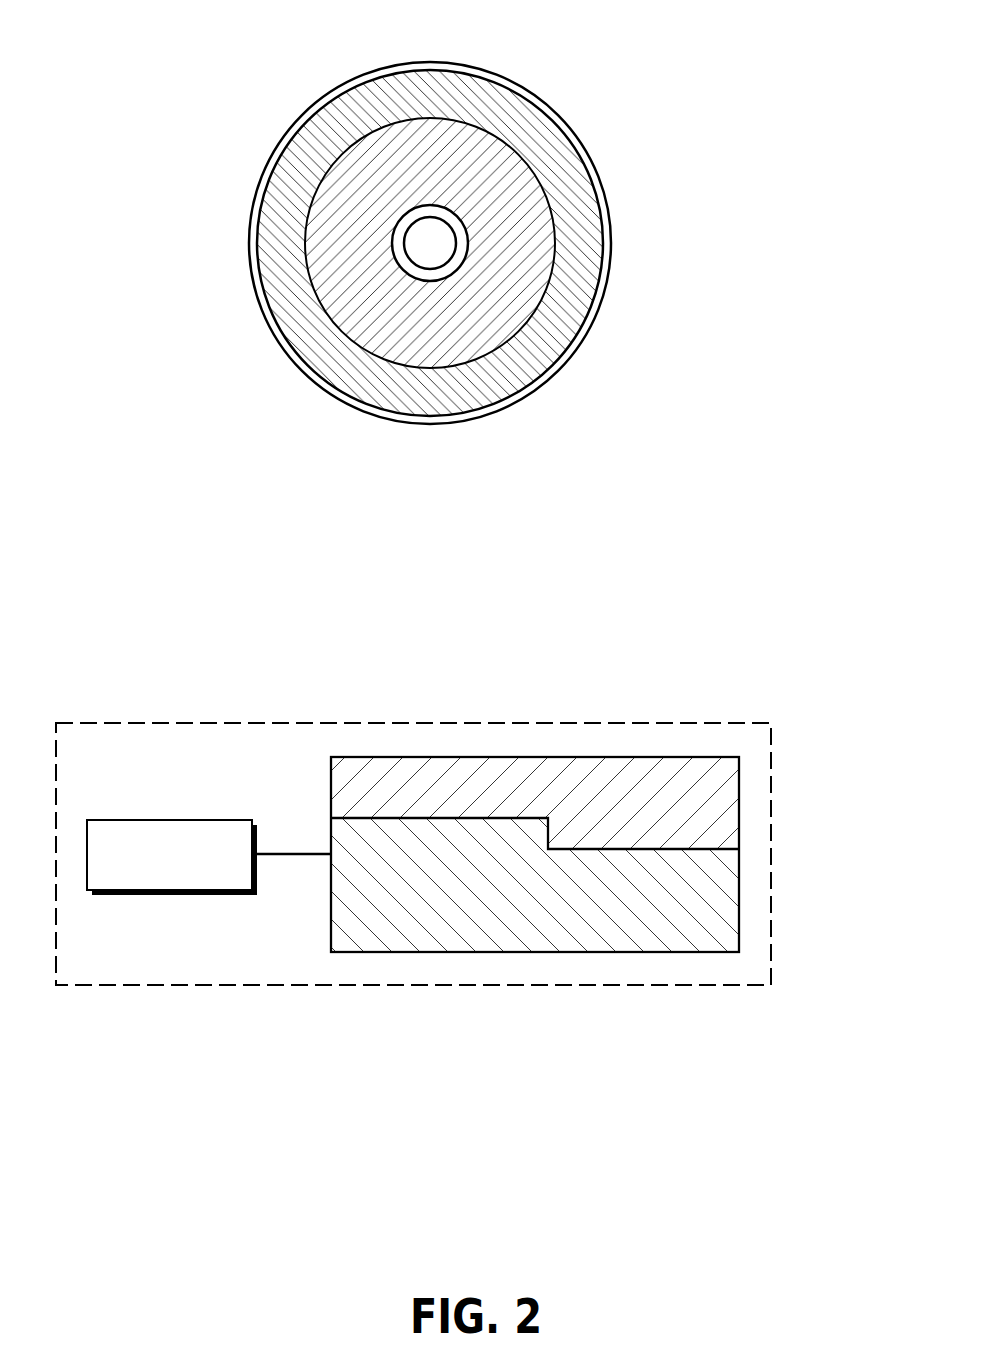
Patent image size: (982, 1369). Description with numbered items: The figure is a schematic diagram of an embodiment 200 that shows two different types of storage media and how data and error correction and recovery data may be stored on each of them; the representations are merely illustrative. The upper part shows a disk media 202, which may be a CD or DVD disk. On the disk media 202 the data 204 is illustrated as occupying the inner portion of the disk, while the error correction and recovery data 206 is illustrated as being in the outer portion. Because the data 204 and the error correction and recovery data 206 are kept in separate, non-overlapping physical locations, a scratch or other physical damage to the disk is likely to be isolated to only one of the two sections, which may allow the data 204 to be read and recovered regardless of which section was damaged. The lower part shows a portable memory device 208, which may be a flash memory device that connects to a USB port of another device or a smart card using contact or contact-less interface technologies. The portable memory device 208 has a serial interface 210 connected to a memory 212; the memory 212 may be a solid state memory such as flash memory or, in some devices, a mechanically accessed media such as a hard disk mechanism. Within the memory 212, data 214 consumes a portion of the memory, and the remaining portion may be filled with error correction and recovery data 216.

The embodiment 200 is at (282, 1068).
The disk media 202 is at (557, 113).
The data 204 is at (358, 305).
The error correction and recovery data 206 is at (573, 295).
The portable memory device 208 is at (540, 986).
The serial interface 210 is at (168, 895).
The memory 212 is at (472, 757).
The data 214 is at (739, 893).
The error correction and recovery data 216 is at (740, 802).